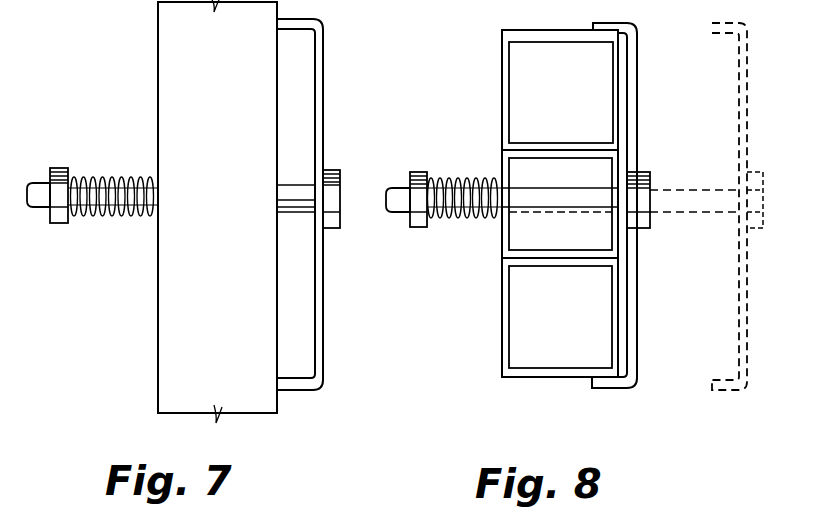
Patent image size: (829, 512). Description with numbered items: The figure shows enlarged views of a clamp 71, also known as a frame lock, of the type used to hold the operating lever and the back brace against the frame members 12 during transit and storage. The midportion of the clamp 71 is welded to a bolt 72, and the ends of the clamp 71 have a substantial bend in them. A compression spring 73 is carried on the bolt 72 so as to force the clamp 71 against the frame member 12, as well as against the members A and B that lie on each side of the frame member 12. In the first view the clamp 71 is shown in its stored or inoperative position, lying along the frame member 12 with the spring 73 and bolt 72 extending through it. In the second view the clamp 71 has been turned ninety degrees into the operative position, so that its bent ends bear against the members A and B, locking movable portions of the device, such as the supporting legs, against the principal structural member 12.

In FIG. 7, the frame member 12 is at (212, 55).
In FIG. 8, the frame member 12 is at (506, 238).
In FIG. 7, the clamp 71 is at (323, 38).
In FIG. 8, the clamp 71 is at (632, 378).
In FIG. 7, the bolt 72 is at (297, 214).
In FIG. 8, the bolt 72 is at (580, 198).
In FIG. 7, the compression spring 73 is at (118, 217).
In FIG. 8, the compression spring 73 is at (468, 180).
In FIG. 8, the member A is at (502, 85).
In FIG. 8, the member B is at (502, 338).